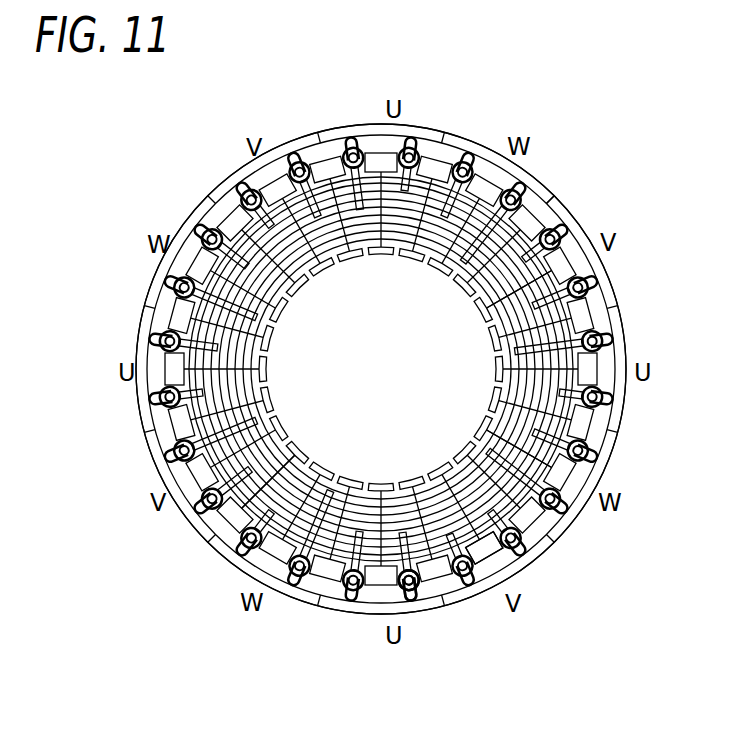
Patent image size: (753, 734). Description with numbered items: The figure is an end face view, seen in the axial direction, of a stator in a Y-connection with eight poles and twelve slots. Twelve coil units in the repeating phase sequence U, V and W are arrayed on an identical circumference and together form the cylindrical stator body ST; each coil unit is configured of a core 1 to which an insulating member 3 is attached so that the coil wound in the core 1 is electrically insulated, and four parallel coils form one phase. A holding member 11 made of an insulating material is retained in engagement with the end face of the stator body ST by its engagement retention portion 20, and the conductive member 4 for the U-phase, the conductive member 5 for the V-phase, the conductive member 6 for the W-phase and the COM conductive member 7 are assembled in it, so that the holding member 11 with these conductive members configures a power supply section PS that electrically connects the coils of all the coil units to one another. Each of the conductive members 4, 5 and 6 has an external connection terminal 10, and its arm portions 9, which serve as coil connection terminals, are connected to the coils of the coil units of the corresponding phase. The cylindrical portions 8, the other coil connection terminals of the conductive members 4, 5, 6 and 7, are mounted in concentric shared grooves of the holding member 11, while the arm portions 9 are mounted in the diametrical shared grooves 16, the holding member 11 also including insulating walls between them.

The stator body ST is at (289, 114).
The core 1 is at (436, 128).
The insulating member 3 is at (382, 150).
The conductive member 4 is at (607, 430).
The conductive member 5 is at (507, 447).
The conductive member 6 is at (304, 472).
The COM conductive member 7 is at (422, 592).
The cylindrical portion 8 is at (374, 490).
The arm portion 9 is at (489, 160).
The external connection terminal 10 is at (393, 207).
The holding member 11 is at (548, 212).
The diametrical shared groove 16 is at (247, 365).
The engagement retention portion 20 is at (498, 574).
The power supply section PS is at (500, 286).